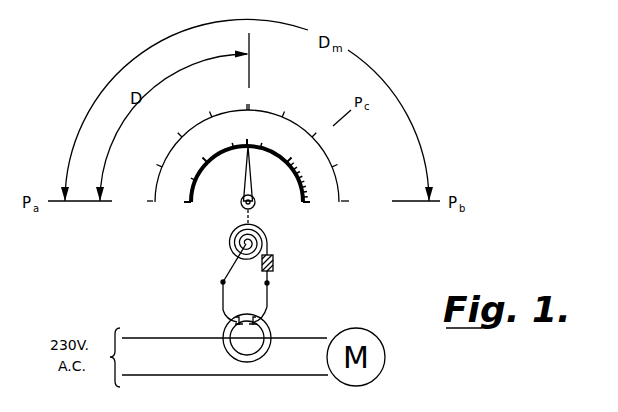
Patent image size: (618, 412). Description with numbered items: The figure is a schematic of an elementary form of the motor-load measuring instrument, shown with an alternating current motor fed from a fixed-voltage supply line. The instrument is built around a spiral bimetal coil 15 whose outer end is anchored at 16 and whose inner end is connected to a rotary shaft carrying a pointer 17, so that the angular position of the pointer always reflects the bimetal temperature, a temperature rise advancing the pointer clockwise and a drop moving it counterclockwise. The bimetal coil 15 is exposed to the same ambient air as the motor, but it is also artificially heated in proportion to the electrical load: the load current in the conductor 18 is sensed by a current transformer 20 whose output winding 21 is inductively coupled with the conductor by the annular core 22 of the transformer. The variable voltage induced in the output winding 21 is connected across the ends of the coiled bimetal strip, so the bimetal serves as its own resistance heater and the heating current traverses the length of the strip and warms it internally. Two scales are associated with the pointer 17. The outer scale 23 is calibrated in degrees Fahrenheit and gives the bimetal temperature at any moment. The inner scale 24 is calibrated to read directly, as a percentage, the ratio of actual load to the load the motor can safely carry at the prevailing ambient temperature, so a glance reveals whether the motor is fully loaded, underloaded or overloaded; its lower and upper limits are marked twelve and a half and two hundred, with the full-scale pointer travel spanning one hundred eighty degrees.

The spiral bimetal coil 15 is at (228, 243).
The anchor 16 is at (276, 263).
The pointer 17 is at (254, 185).
The conductor 18 is at (303, 337).
The current transformer 20 is at (214, 318).
The output winding 21 is at (245, 313).
The annular core 22 is at (227, 348).
The outer scale 23 is at (144, 207).
The inner scale 24 is at (193, 187).